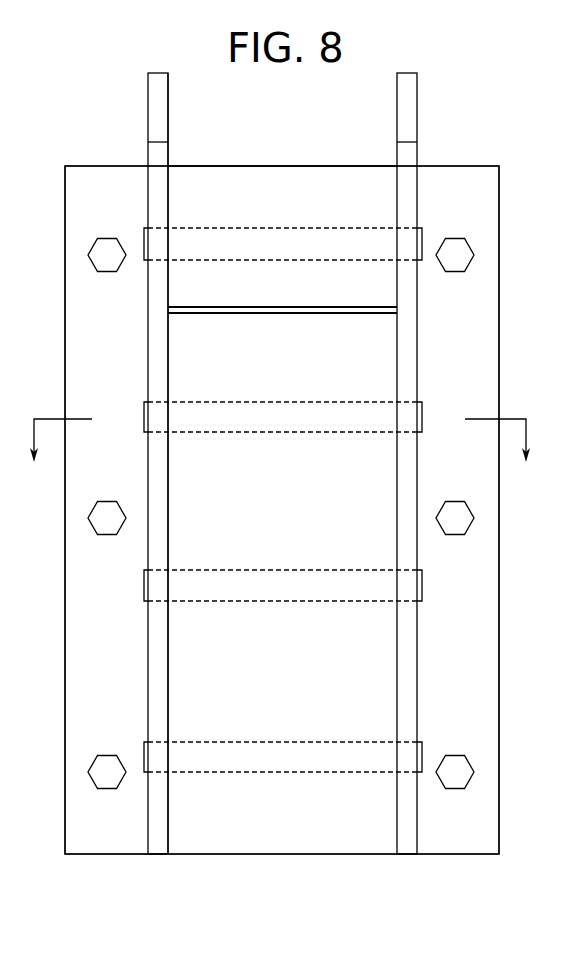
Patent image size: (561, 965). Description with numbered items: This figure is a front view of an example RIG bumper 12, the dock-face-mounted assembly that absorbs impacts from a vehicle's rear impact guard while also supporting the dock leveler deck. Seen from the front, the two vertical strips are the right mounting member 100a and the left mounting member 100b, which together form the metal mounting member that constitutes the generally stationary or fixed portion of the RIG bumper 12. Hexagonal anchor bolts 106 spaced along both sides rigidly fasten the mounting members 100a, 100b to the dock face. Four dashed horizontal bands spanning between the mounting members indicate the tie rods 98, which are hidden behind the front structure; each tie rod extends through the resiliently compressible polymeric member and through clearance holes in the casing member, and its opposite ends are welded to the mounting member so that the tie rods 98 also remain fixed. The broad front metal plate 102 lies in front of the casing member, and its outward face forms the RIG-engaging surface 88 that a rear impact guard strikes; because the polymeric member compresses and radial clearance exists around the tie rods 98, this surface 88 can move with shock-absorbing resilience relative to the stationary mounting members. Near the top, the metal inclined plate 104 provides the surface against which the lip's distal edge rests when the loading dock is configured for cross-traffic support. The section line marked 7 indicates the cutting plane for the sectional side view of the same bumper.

The RIG bumper 12 is at (478, 134).
The RIG-engaging surface 88 is at (290, 819).
The tie rods 98 is at (342, 570).
The right mounting member 100a is at (397, 354).
The left mounting member 100b is at (168, 373).
The front metal plate 102 is at (188, 650).
The metal inclined plate 104 is at (278, 190).
The anchor bolts 106 is at (108, 236).
The section line for FIG. 7 is at (280, 452).